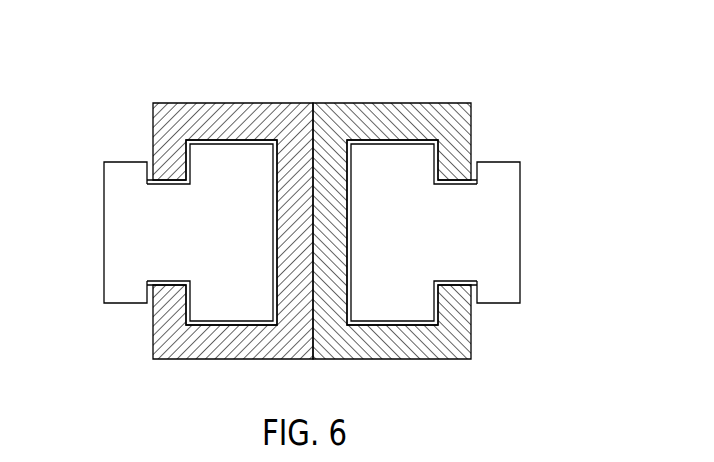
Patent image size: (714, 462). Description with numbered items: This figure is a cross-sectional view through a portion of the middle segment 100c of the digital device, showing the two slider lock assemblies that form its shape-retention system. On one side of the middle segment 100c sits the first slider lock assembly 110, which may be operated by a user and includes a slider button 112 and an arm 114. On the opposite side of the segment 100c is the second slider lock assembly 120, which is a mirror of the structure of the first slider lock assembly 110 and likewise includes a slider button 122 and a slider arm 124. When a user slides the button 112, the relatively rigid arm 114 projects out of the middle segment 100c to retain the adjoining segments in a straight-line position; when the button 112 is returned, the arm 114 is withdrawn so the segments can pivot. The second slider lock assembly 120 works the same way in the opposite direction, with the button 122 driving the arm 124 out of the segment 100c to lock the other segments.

The middle segment 100c is at (300, 103).
The first slider lock assembly 110 is at (130, 232).
The slider button 112 is at (130, 272).
The arm 114 is at (215, 175).
The second slider lock assembly 120 is at (505, 230).
The slider button 122 is at (505, 275).
The slider arm 124 is at (390, 184).